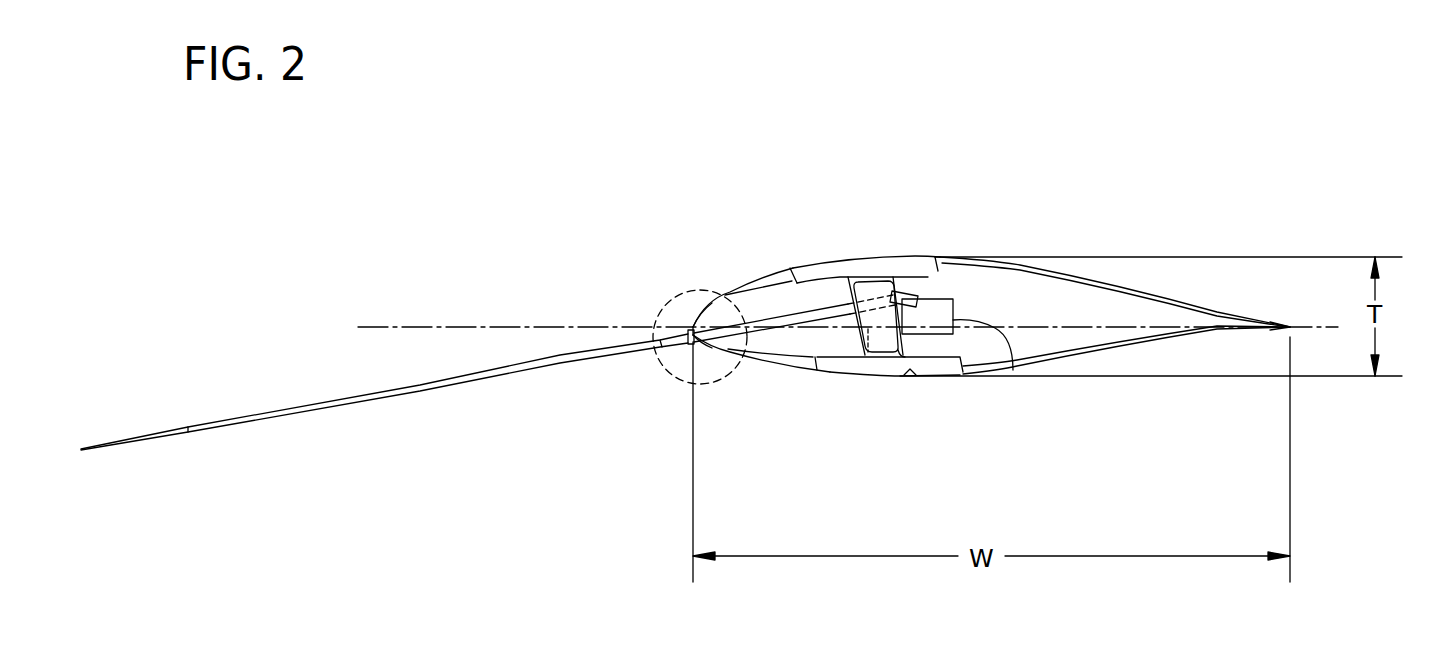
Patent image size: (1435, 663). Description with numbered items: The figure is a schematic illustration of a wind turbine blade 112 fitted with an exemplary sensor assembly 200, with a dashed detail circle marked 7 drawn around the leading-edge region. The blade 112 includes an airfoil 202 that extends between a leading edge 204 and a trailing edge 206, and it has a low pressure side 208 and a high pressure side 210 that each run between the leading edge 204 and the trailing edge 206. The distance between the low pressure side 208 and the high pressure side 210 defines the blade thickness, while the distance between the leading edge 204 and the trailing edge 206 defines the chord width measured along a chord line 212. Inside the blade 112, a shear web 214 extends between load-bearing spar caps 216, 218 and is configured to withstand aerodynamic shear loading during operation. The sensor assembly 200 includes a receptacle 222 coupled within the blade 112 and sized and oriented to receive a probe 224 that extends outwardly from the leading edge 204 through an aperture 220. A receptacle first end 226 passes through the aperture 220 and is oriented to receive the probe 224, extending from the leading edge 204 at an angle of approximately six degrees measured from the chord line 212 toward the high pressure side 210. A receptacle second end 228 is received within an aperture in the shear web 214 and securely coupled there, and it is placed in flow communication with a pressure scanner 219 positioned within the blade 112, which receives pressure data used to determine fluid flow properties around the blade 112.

The detail view region 7 is at (670, 297).
The wind turbine blade 112 is at (1133, 272).
The sensor assembly 200 is at (609, 256).
The airfoil 202 is at (1025, 297).
The leading edge 204 is at (700, 300).
The trailing edge 206 is at (1288, 330).
The low pressure side 208 is at (787, 268).
The high pressure side 210 is at (788, 370).
The chord line 212 is at (415, 326).
The shear web 214 is at (858, 320).
The spar cap 216 is at (893, 262).
The spar cap 218 is at (911, 373).
The scanner 219 is at (1013, 370).
The aperture 220 is at (697, 385).
The receptacle 222 is at (771, 315).
The probe 224 is at (355, 395).
The receptacle first end 226 is at (690, 347).
The receptacle second end 228 is at (920, 276).